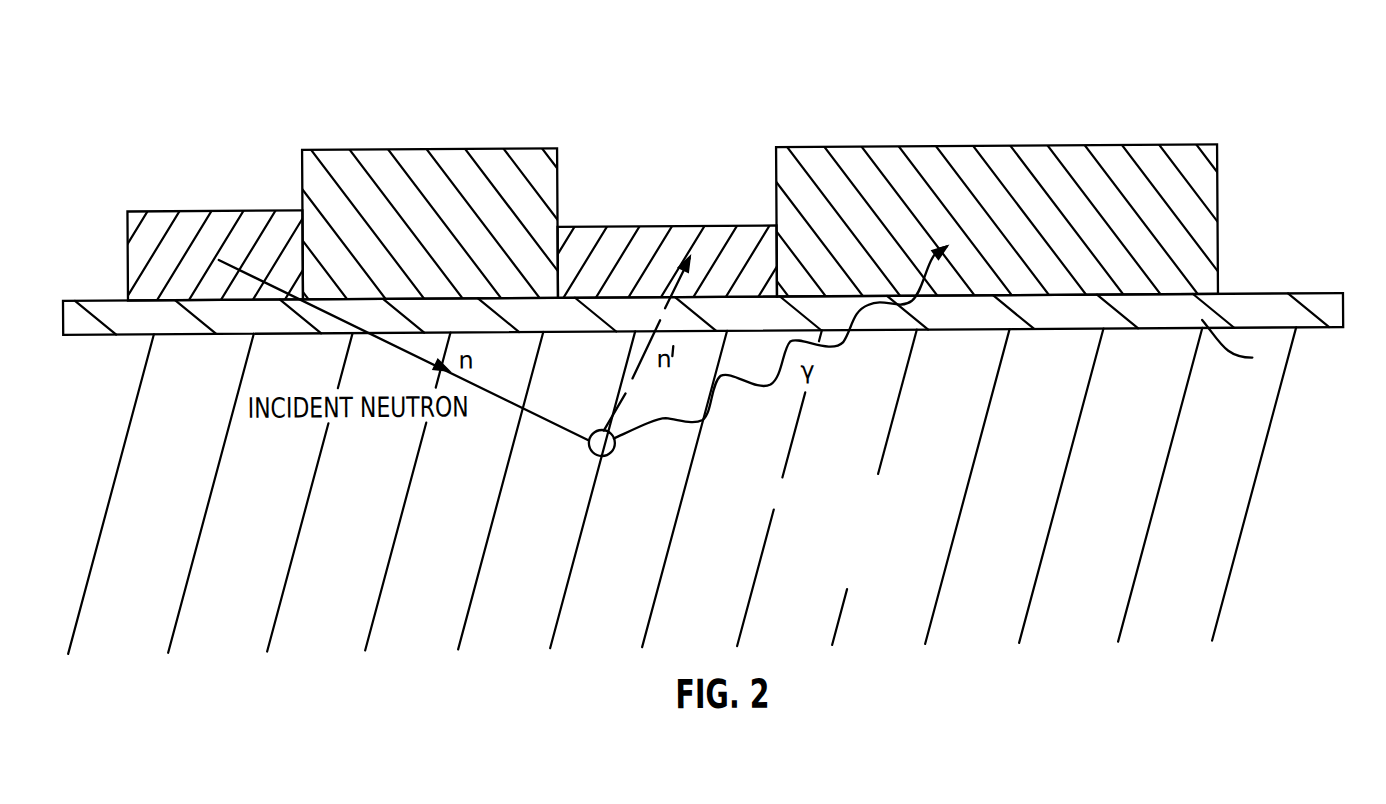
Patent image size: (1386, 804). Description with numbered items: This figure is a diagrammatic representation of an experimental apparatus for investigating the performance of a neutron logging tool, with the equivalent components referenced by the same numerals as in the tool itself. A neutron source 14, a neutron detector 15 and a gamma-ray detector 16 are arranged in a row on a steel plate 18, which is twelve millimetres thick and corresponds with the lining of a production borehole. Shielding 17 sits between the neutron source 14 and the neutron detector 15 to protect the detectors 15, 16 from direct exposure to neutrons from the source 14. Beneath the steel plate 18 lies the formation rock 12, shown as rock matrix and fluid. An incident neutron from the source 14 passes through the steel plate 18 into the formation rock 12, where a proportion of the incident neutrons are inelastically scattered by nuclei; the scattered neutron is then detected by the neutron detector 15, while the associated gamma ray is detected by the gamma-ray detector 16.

The formation rock 12 is at (855, 586).
The neutron source 14 is at (208, 215).
The neutron detector 15 is at (658, 238).
The gamma-ray detector 16 is at (923, 190).
The shielding 17 is at (473, 193).
The steel plate 18 is at (1262, 307).